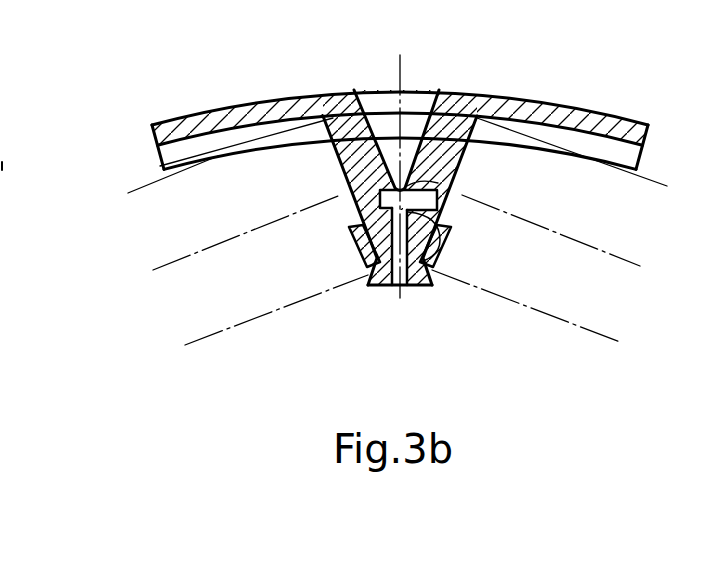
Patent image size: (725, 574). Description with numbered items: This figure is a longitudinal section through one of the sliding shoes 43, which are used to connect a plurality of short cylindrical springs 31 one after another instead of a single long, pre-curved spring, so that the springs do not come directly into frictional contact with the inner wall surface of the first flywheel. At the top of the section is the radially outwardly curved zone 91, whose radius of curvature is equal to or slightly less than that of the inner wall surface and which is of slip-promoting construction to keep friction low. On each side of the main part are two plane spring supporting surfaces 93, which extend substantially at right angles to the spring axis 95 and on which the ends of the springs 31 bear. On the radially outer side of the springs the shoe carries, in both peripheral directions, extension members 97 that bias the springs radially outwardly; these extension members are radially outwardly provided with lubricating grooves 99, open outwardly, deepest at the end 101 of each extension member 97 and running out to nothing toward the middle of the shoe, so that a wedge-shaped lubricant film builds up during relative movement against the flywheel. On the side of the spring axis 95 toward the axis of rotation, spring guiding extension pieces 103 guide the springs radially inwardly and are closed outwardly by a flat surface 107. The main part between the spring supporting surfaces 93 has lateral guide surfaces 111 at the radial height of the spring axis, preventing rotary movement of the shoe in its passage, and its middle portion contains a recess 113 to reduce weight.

The spring 31 is at (222, 332).
The sliding shoe 43 is at (533, 89).
The radially outwardly curved zone 91 is at (492, 91).
The spring supporting surface 93 is at (343, 168).
The spring axis 95 is at (182, 258).
The extension member 97 is at (185, 132).
The lubricating groove 99 is at (193, 118).
The end of the extension member 101 is at (152, 151).
The spring guiding extension piece 103 is at (381, 286).
The flat surface 107 is at (428, 288).
The lateral guide surface 111 is at (426, 207).
The recess 113 is at (386, 123).